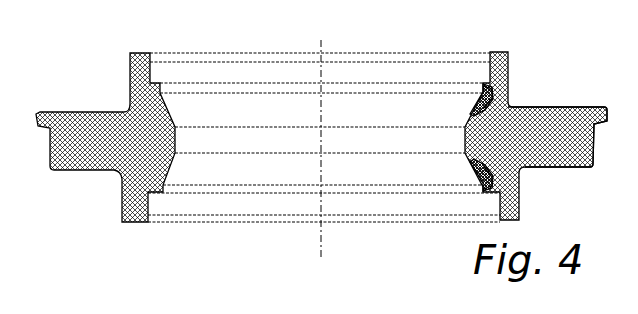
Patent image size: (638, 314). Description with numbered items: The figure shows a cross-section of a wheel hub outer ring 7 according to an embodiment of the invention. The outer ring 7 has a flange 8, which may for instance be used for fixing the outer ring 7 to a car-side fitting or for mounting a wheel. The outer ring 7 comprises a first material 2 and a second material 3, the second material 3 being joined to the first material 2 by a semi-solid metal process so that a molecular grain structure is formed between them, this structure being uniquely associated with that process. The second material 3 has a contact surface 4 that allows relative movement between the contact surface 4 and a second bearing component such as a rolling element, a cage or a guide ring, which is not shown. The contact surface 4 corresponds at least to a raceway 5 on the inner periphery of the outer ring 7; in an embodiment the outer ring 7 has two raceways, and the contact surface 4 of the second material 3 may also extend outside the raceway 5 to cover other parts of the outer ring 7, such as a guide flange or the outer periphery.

The outer ring 7 is at (87, 59).
The first material 2 is at (523, 184).
The flange 8 is at (575, 106).
The second material 3 is at (486, 106).
The contact surface 4 is at (482, 99).
The raceway 5 is at (484, 94).